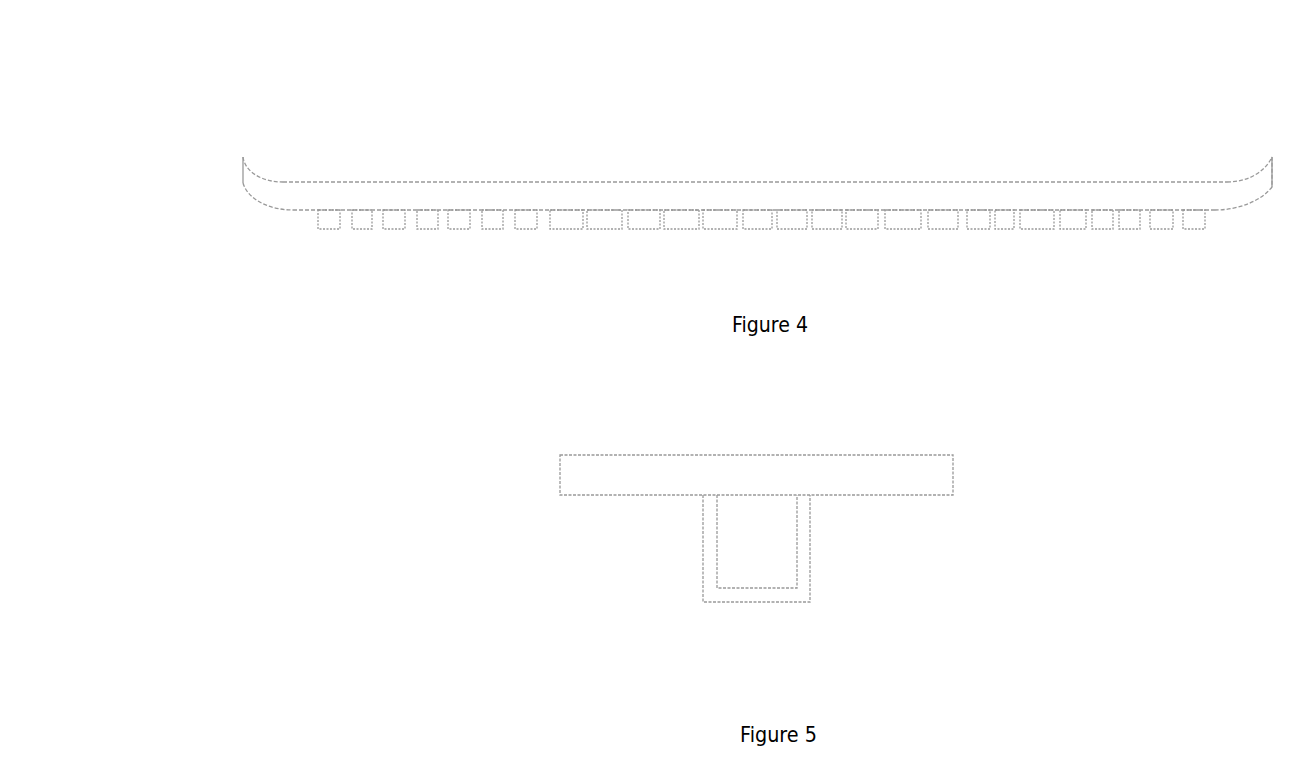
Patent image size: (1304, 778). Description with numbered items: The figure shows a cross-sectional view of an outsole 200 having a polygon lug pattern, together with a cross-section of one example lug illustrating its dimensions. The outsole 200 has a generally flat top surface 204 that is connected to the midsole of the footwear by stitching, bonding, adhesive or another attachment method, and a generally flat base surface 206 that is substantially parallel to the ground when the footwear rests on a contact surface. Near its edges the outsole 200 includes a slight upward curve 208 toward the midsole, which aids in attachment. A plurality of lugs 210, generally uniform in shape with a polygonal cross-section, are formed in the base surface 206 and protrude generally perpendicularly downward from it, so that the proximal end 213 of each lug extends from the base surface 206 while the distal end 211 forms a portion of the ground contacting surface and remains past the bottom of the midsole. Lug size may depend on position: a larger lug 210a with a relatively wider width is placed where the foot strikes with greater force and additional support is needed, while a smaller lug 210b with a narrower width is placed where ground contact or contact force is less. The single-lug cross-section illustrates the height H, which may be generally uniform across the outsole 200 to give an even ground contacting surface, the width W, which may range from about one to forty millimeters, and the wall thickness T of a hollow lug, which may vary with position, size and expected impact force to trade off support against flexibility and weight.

In FIG. 4, the outsole 200 is at (420, 141).
In FIG. 4, the top surface 204 is at (678, 182).
In FIG. 4, the base surface 206 is at (293, 211).
In FIG. 4, the upward curve 208 is at (245, 189).
In FIG. 4, the lugs 210 is at (360, 218).
In FIG. 4, the larger lug 210a is at (903, 218).
In FIG. 4, the smaller lug 210b is at (328, 218).
In FIG. 4, the distal end 211 is at (680, 230).
In FIG. 4, the proximal end 213 is at (942, 208).
In FIG. 5, the width W is at (810, 667).
In FIG. 5, the wall thickness T is at (757, 549).
In FIG. 5, the height H is at (968, 496).